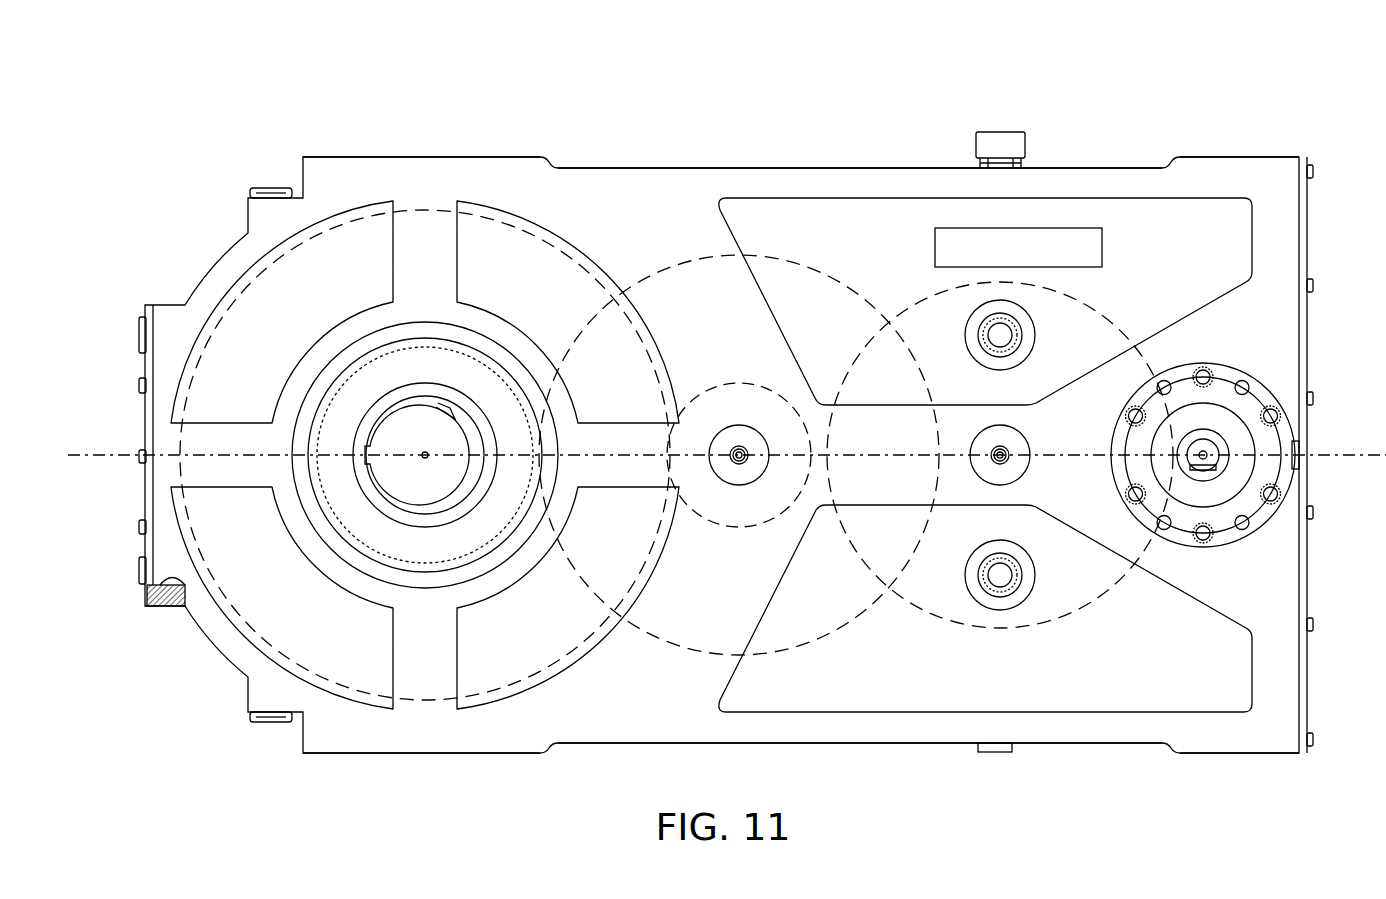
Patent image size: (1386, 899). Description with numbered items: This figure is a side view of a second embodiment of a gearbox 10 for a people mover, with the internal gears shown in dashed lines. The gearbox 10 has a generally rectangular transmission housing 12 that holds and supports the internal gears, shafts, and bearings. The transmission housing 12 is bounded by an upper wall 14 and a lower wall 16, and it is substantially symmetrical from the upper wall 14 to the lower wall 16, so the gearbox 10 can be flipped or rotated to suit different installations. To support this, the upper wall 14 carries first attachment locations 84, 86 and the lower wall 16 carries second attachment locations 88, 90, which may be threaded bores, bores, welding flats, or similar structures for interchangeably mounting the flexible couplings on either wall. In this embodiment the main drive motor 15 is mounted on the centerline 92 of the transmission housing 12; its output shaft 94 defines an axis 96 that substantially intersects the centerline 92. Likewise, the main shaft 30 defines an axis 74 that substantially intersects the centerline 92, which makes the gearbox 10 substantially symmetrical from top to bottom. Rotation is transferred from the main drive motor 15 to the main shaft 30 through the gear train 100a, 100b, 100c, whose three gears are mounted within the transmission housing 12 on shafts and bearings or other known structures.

The gearbox 10 is at (1048, 83).
The transmission housing 12 is at (1115, 178).
The upper wall 14 is at (692, 168).
The main drive motor 15 is at (1263, 393).
The lower wall 16 is at (873, 743).
The main shaft 30 is at (425, 487).
The axis 74 is at (425, 455).
The first attachment location 84 is at (373, 156).
The first attachment location 86 is at (1248, 156).
The second attachment location 88 is at (357, 754).
The second attachment location 90 is at (1240, 754).
The centerline 92 is at (1355, 453).
The output shaft 94 is at (1203, 455).
The axis 96 is at (1212, 458).
The gear train 100a is at (1073, 582).
The gear train 100b is at (714, 622).
The gear train 100c is at (488, 648).